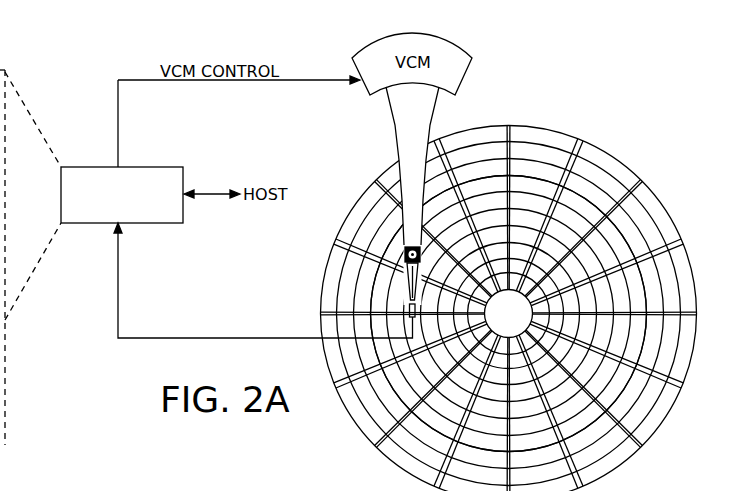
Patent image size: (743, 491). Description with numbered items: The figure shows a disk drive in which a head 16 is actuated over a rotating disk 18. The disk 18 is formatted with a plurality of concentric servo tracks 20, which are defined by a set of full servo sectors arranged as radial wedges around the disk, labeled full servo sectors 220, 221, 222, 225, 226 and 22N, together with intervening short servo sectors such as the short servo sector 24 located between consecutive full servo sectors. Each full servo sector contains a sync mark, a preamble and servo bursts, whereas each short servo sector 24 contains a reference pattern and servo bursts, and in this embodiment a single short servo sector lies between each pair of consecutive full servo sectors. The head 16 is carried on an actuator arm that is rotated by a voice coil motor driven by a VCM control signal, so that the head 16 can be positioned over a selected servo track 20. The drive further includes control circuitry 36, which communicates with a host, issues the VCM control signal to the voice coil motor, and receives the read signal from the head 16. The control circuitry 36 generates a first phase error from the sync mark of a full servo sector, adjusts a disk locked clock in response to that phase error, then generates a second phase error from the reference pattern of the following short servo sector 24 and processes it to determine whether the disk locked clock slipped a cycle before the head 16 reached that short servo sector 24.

The head 16 is at (400, 307).
The disk 18 is at (520, 289).
The servo tracks 20 is at (499, 152).
The full servo sector 220 is at (582, 148).
The full servo sector 221 is at (684, 246).
The full servo sector 222 is at (681, 386).
The full servo sector 225 is at (344, 396).
The full servo sector 226 is at (334, 236).
The full servo sector 22N is at (442, 148).
The short servo sector 24 is at (533, 315).
The control circuitry 36 is at (156, 166).